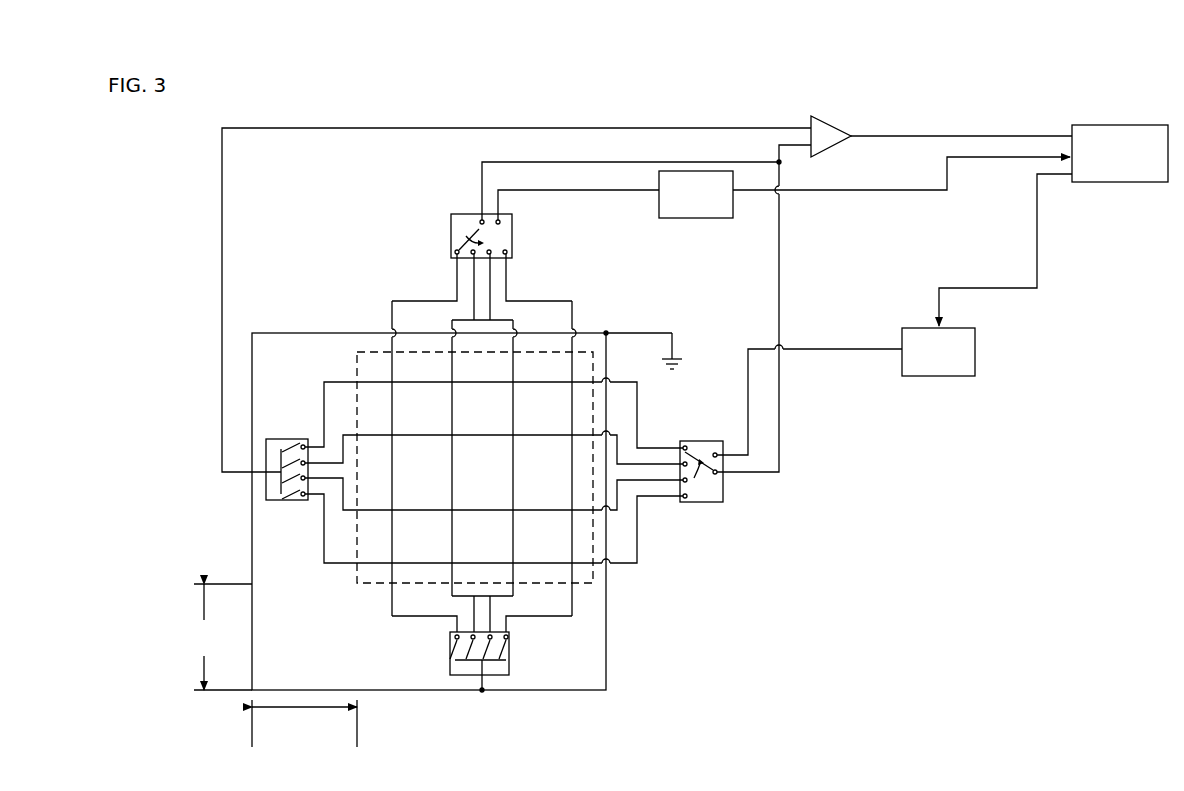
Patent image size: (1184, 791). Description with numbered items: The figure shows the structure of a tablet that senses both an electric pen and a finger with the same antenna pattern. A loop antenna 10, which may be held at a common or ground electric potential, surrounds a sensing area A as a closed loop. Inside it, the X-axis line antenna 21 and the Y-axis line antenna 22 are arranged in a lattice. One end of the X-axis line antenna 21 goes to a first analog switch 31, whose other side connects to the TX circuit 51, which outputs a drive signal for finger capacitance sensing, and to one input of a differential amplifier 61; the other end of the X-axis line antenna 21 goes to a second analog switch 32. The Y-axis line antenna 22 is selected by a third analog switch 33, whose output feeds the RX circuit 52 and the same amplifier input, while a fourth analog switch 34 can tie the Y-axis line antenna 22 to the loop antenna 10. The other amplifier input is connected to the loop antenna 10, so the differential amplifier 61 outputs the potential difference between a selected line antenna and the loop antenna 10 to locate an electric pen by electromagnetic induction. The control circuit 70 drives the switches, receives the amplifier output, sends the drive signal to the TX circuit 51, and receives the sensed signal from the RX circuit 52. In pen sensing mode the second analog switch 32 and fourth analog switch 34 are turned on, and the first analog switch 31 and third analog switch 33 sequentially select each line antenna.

The loop antenna 10 is at (607, 667).
The X-axis line antenna 21 is at (537, 560).
The Y-axis line antenna 22 is at (392, 545).
The first analog switch 31 is at (700, 503).
The second analog switch 32 is at (284, 501).
The third analog switch 33 is at (513, 240).
The fourth analog switch 34 is at (450, 650).
The TX circuit 51 is at (976, 350).
The RX circuit 52 is at (695, 219).
The differential amplifier 61 is at (834, 128).
The control circuit 70 is at (1120, 183).
The sensing area A is at (595, 583).